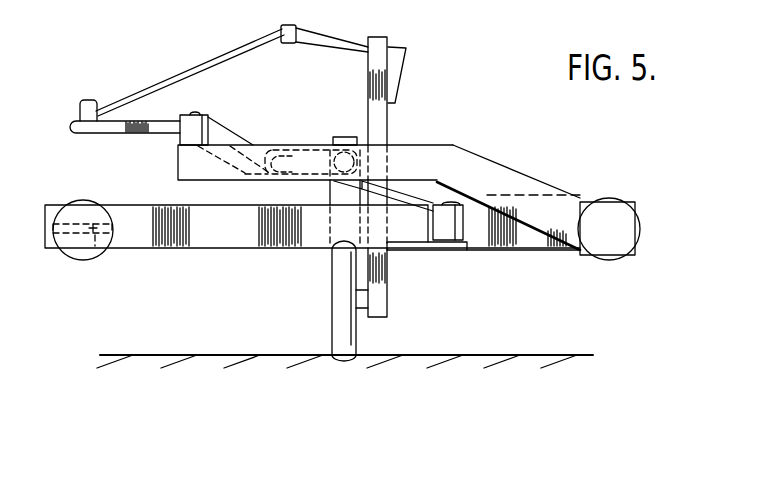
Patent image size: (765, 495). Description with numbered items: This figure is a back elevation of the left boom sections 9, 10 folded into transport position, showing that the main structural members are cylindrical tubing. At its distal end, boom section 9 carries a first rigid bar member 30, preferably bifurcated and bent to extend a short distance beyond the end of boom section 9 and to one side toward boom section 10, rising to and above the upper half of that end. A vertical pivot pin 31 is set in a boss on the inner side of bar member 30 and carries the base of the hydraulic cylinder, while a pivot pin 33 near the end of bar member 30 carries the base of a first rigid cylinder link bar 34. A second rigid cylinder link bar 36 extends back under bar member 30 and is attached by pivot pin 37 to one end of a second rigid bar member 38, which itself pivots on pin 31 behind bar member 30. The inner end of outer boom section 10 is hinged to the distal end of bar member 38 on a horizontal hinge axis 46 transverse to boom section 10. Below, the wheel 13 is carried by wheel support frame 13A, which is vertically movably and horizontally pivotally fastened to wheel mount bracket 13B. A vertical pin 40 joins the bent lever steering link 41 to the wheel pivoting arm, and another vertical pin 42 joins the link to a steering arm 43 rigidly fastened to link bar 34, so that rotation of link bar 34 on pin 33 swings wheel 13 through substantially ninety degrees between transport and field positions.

The left inner boom section 9 is at (607, 201).
The left outer boom section 10 is at (82, 200).
The wheel 13 is at (332, 334).
The wheel support frame 13A is at (390, 122).
The wheel mount bracket 13B is at (528, 250).
The first rigid bar member 30 is at (418, 144).
The vertical pivot pin 31 is at (338, 137).
The pivot pin 33 is at (198, 113).
The first rigid cylinder link bar 34 is at (235, 133).
The second rigid cylinder link bar 36 is at (438, 182).
The pivot pin 37 is at (447, 202).
The second rigid bar member 38 is at (430, 250).
The vertical pin 40 is at (285, 32).
The bent lever steering link 41 is at (167, 75).
The vertical pin 42 is at (95, 100).
The steering arm 43 is at (118, 134).
The hinge axis 46 is at (98, 255).